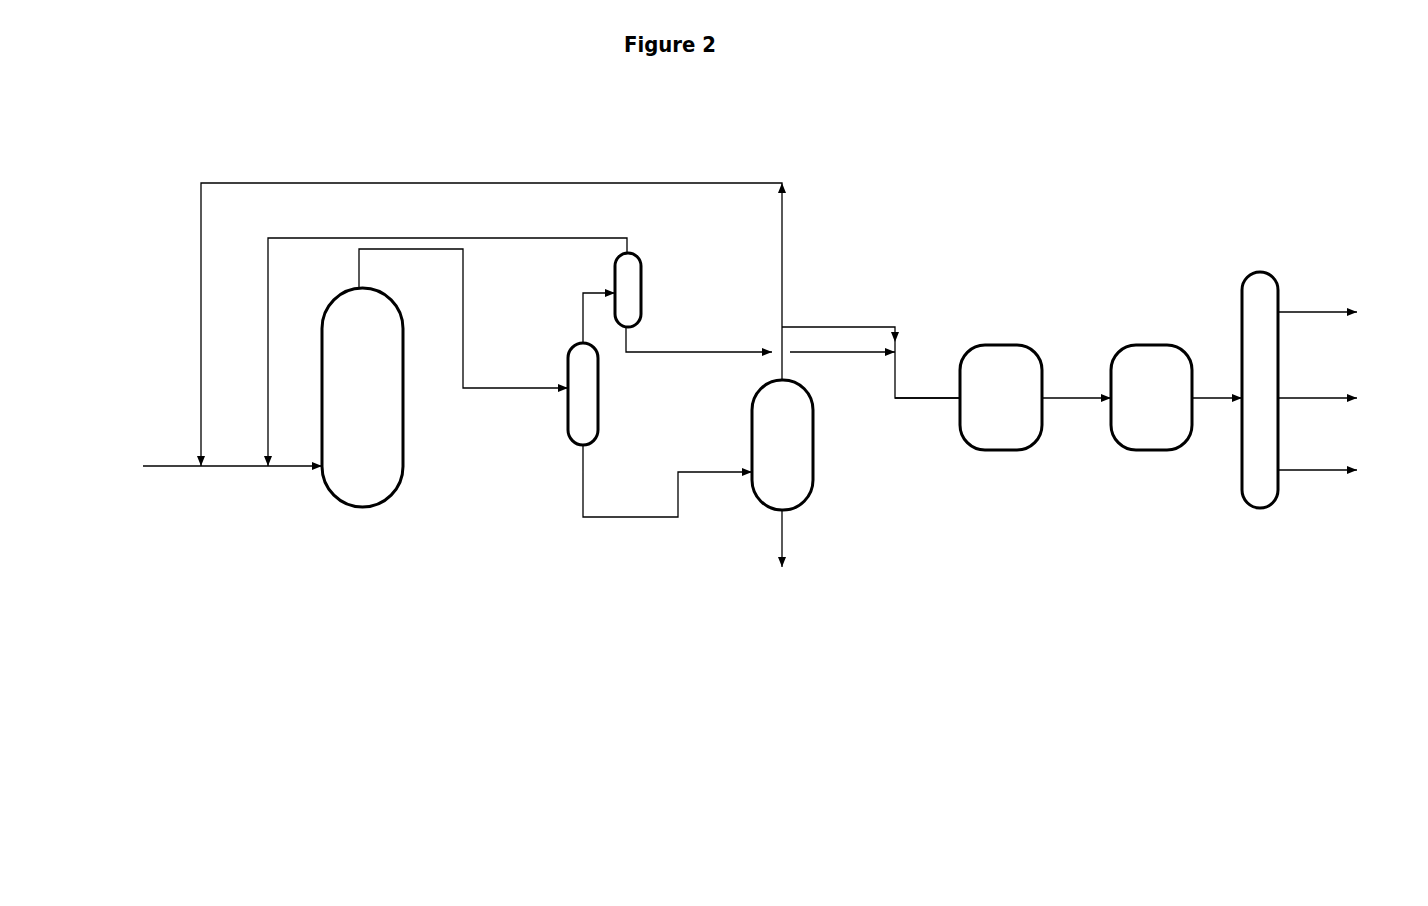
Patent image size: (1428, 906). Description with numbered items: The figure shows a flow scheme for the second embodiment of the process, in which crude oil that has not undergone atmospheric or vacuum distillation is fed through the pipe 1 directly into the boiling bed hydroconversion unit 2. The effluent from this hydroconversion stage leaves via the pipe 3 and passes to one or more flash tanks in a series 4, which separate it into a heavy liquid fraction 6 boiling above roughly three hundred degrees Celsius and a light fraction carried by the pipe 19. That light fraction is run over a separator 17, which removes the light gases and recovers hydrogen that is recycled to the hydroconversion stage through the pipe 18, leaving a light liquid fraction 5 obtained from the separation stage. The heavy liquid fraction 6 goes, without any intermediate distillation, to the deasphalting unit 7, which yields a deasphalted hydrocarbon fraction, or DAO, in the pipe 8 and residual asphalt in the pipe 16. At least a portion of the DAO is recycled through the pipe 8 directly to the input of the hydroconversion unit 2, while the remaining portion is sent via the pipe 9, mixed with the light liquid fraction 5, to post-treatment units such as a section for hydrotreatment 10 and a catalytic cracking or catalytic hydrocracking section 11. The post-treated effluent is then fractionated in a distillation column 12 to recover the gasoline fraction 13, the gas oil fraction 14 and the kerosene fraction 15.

The pipe 1 is at (232, 482).
The boiling bed hydroconversion unit 2 is at (362, 397).
The pipe 3 is at (463, 320).
The flash tanks in a series 4 is at (583, 394).
The light liquid fraction from separation stage b) 5 is at (760, 340).
The heavy liquid fraction 6 is at (667, 481).
The deasphalting unit 7 is at (782, 445).
The pipe 8 is at (578, 324).
The pipe 9 is at (1068, 385).
The section for hydrotreatment 10 is at (1001, 397).
The catalytic cracking or catalytic hydrocracking section 11 is at (1151, 397).
The distillation column 12 is at (1269, 376).
The gasoline fraction 13 is at (1317, 299).
The gas oil fraction 14 is at (1317, 384).
The kerosene fraction 15 is at (1317, 457).
The pipe 16 is at (812, 538).
The separator 17 is at (655, 287).
The pipe 18 is at (445, 336).
The pipe 19 is at (573, 316).